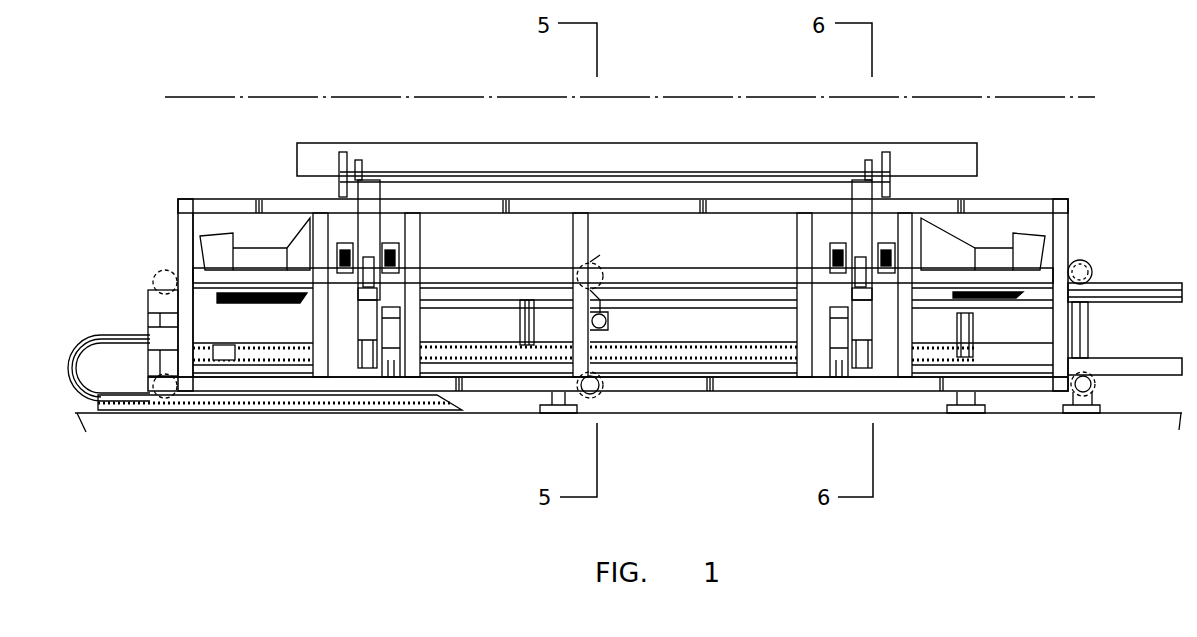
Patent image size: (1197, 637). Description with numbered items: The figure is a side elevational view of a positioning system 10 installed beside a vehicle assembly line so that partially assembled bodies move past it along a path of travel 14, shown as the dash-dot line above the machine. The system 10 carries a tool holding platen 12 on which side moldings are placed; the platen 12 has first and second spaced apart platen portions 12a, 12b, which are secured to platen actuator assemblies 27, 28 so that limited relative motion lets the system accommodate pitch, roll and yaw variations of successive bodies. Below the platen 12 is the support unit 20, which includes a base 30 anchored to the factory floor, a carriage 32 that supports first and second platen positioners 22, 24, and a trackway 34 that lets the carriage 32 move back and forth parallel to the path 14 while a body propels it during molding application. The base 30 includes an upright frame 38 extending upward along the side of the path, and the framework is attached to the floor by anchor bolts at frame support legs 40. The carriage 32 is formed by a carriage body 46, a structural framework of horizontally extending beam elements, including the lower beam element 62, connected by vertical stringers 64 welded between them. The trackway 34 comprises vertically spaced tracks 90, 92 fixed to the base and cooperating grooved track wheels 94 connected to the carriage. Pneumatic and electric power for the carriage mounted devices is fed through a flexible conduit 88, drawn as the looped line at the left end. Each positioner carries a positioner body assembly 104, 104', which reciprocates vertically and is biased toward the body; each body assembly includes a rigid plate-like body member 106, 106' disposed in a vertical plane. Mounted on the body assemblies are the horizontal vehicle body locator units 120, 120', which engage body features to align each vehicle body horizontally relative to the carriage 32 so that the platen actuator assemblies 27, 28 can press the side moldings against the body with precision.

The positioning system 10 is at (1066, 152).
The platen 12 is at (760, 143).
The platen portion 12a is at (905, 152).
The platen portion 12b is at (338, 145).
The path of travel 14 is at (1079, 97).
The support unit 20 is at (1112, 287).
The first platen positioner 22 is at (810, 240).
The second platen positioner 24 is at (424, 247).
The platen actuator assembly 27 is at (875, 345).
The platen actuator assembly 28 is at (357, 325).
The base 30 is at (143, 385).
The carriage 32 is at (187, 198).
The trackway 34 is at (617, 296).
The upright frame 38 is at (1110, 362).
The frame support legs 40 is at (1100, 402).
The carriage body 46 is at (1048, 200).
The beam element 62 is at (483, 387).
The vertical stringers 64 is at (183, 233).
The flexible conduit 88 is at (100, 345).
The track 90 is at (697, 292).
The track 92 is at (615, 305).
The track wheels 94 is at (1090, 266).
The positioner body assembly 104 is at (843, 207).
The positioner body assembly 104' is at (410, 205).
The body member 106 is at (957, 324).
The body member 106' is at (281, 326).
The horizontal vehicle body locator unit 120 is at (984, 215).
The horizontal vehicle body locator unit 120' is at (255, 220).